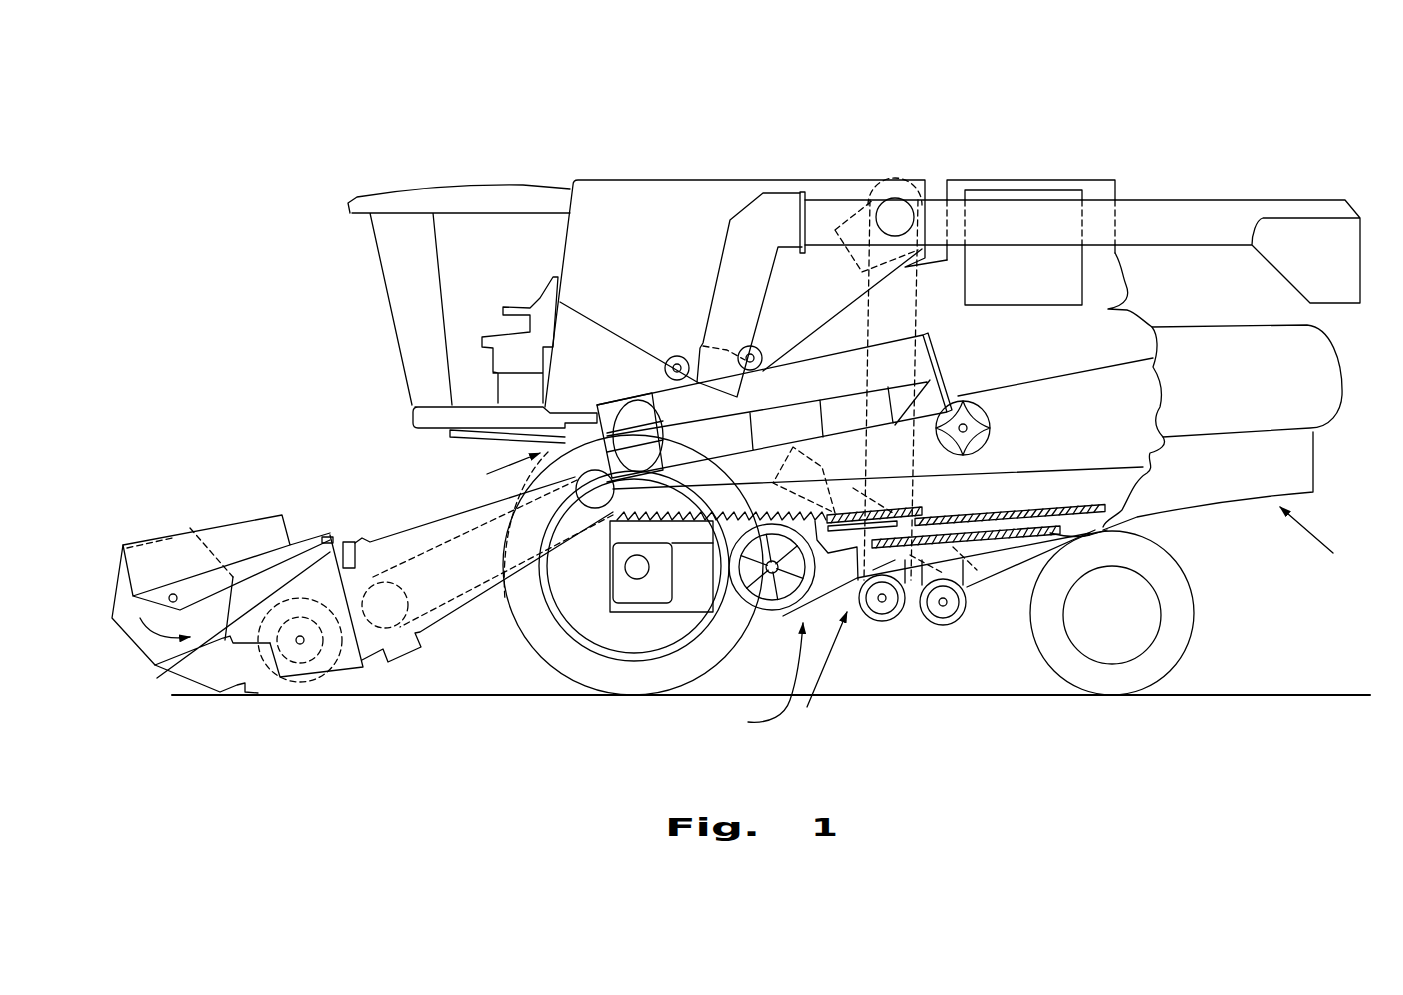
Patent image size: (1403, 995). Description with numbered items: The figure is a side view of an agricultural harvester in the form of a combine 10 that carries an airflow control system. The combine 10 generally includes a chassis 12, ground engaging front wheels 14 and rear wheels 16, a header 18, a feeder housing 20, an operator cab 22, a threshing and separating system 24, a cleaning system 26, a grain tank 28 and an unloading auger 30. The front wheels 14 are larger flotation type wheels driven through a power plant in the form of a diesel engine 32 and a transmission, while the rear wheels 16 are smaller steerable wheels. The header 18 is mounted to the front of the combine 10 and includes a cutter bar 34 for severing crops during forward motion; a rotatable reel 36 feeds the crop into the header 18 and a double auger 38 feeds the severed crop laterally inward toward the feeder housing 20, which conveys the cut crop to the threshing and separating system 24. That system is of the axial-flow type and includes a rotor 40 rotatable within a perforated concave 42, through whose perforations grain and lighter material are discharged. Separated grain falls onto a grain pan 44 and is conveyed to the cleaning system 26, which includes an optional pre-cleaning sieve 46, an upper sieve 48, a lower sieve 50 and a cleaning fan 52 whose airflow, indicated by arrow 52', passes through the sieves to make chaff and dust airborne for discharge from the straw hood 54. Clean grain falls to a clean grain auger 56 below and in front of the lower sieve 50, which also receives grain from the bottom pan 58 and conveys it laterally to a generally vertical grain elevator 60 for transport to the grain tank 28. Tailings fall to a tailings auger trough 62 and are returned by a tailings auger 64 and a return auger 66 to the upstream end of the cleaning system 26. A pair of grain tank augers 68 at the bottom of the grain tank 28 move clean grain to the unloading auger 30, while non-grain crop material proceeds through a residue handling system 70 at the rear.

The combine 10 is at (453, 170).
The chassis 12 is at (1128, 526).
The front wheels 14 is at (537, 650).
The rear wheels 16 is at (1190, 633).
The header 18 is at (210, 513).
The feeder housing 20 is at (425, 518).
The operator cab 22 is at (387, 287).
The threshing and separating system 24 is at (498, 474).
The cleaning system 26 is at (818, 676).
The grain tank 28 is at (627, 187).
The unloading auger 30 is at (1210, 208).
The diesel engine 32 is at (1010, 192).
The cutter bar 34 is at (227, 690).
The rotatable reel 36 is at (116, 588).
The double auger 38 is at (301, 648).
The rotor 40 is at (623, 410).
The concave 42 is at (814, 387).
The grain pan 44 is at (603, 528).
The pre-cleaning sieve 46 is at (920, 511).
The upper sieve 48 is at (1027, 510).
The lower sieve 50 is at (993, 543).
The cleaning fan 52 is at (793, 607).
The air flow direction arrow 52' is at (760, 679).
The straw hood 54 is at (1323, 370).
The clean grain auger 56 is at (888, 620).
The bottom pan 58 is at (1040, 546).
The grain elevator 60 is at (918, 312).
The tailings auger trough 62 is at (1022, 548).
The tailings auger 64 is at (943, 625).
The return auger 66 is at (854, 496).
The grain tank augers 68 is at (675, 356).
The residue handling system 70 is at (1319, 545).